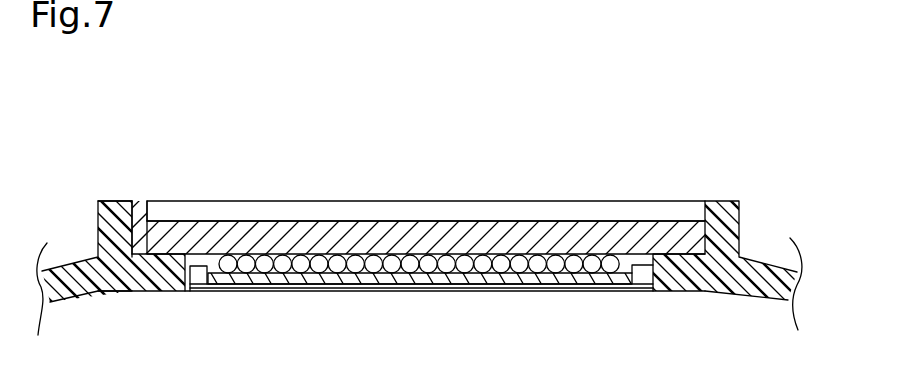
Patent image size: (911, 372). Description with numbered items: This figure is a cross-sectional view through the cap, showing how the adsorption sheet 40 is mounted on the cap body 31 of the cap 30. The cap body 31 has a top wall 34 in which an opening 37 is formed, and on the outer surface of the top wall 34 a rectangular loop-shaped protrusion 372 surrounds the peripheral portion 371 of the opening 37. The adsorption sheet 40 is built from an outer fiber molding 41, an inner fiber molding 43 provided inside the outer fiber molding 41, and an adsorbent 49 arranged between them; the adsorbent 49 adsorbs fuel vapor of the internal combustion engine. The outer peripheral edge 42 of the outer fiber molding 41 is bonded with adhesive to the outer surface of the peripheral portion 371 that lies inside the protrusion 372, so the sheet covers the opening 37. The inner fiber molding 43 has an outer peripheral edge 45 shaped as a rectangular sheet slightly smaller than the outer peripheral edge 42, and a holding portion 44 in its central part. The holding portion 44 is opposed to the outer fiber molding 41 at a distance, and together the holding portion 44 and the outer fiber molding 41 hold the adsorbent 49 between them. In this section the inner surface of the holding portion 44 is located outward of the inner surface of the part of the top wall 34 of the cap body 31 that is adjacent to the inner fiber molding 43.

The semiconductor device 30 is at (637, 124).
The cap body 31 is at (455, 260).
The top wall 34 is at (768, 262).
The opening 37 is at (196, 291).
The peripheral portion 371 is at (163, 250).
The protrusion 372 is at (108, 201).
The adsorption sheet 40 is at (490, 196).
The outer fiber molding 41 is at (423, 214).
The outer peripheral edge 42 is at (140, 281).
The inner fiber molding 43 is at (475, 296).
The holding portion 44 is at (417, 285).
The outer peripheral edge 45 is at (212, 291).
The adsorbent 49 is at (284, 275).